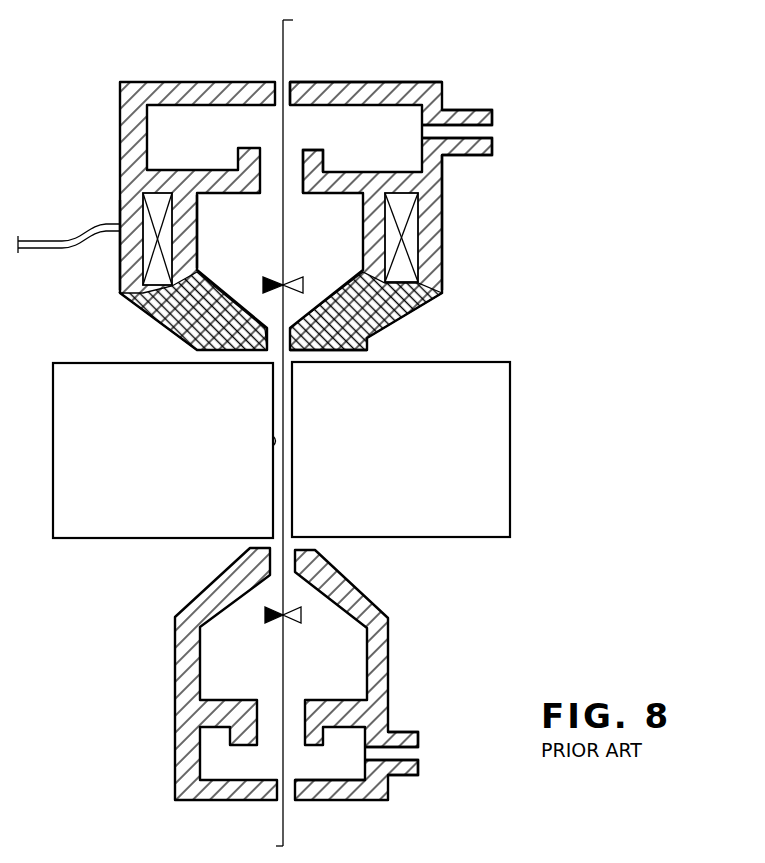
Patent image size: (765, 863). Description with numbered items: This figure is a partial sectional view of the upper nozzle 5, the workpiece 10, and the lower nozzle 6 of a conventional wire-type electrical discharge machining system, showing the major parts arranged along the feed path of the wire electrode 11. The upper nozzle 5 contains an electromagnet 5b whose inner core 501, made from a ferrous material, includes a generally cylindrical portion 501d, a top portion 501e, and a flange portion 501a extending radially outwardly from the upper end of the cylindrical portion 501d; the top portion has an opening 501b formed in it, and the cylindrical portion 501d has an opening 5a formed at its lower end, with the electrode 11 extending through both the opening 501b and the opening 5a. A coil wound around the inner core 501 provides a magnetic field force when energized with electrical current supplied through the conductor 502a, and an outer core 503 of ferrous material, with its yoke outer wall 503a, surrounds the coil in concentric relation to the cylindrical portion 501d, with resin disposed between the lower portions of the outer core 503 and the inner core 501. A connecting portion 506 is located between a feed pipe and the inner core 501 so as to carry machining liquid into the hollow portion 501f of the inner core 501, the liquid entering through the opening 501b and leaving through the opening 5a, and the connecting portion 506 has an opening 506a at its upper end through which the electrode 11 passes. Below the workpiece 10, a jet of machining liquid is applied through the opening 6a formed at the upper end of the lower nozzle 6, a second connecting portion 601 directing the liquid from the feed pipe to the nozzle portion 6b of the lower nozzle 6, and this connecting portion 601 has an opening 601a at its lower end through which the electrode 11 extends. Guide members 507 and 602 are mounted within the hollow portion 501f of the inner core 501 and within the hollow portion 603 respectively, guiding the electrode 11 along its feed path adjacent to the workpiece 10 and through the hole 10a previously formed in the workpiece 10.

The upper nozzle 5 is at (594, 213).
The opening 5a is at (272, 364).
The electromagnet 5b is at (530, 262).
The lower nozzle 6 is at (510, 644).
The opening 6a is at (244, 673).
The nozzle portion 6b is at (422, 608).
The workpiece 10 is at (485, 490).
The hole 10a is at (273, 447).
The electrode 11 is at (284, 45).
The inner core 501 is at (356, 172).
The flange portion 501a is at (444, 184).
The opening 501b is at (292, 168).
The cylindrical portion 501d is at (188, 245).
The top portion 501e is at (218, 170).
The hollow portion 501f is at (251, 234).
The conductor 502a is at (68, 235).
The outer core 503 is at (433, 300).
The yoke outer wall 503a is at (444, 226).
The connecting portion 506 is at (432, 62).
The opening 506a is at (290, 80).
The guide member 507 is at (305, 283).
The second connecting portion 601 is at (374, 800).
The opening 601a is at (294, 801).
The guide member 602 is at (303, 618).
The hollow portion 603 is at (215, 642).